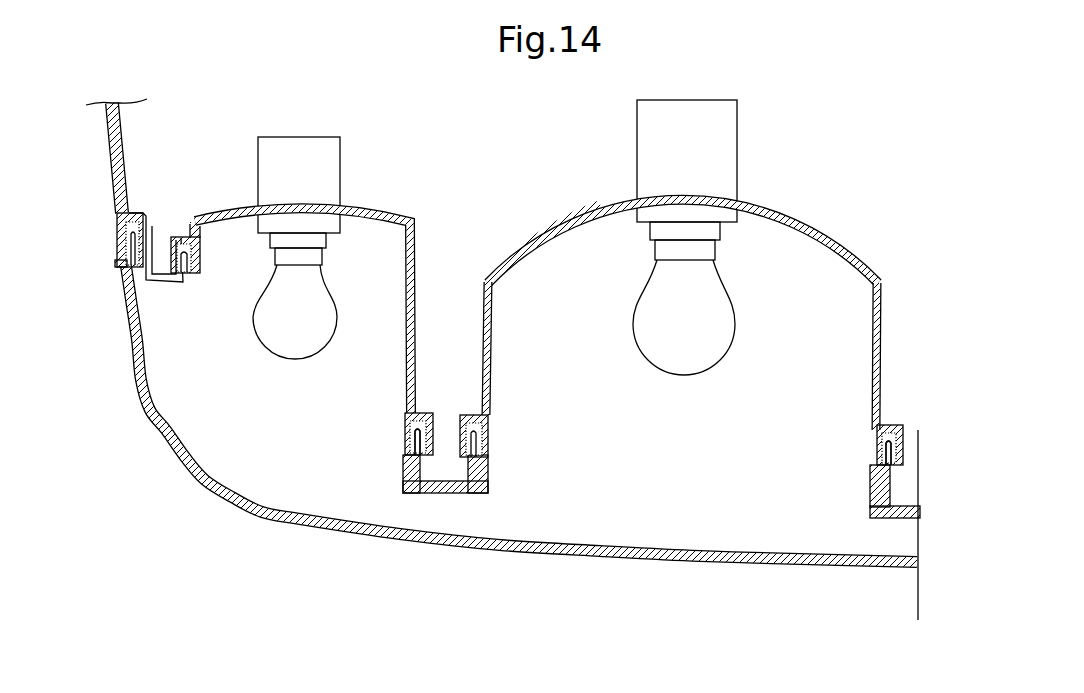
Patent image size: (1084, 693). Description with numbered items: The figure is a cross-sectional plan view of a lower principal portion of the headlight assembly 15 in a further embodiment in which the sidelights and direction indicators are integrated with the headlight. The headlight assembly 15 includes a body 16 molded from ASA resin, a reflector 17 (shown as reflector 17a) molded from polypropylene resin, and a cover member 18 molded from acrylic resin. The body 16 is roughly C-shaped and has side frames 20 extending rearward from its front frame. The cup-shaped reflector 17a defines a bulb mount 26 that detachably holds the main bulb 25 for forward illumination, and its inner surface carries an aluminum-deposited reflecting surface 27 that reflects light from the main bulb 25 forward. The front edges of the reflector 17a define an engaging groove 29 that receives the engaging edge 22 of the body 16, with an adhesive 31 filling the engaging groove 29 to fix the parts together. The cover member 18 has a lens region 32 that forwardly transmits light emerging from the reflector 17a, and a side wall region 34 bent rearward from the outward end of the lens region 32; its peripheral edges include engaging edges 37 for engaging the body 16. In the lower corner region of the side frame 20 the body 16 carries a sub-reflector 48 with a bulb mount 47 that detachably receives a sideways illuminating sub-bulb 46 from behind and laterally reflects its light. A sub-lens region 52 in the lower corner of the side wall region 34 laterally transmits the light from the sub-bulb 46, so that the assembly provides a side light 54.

The headlight assembly 15 is at (432, 544).
The body 16 is at (127, 168).
The reflector 17a is at (782, 220).
The reflectors 17 is at (683, 241).
The cover member 18 is at (261, 522).
The side frames 20 is at (122, 130).
The engaging edge 22 is at (186, 276).
The main bulb 25 is at (706, 307).
The bulb mount 26 is at (722, 165).
The reflecting surface 27 is at (590, 232).
The engaging groove 29 is at (470, 418).
The adhesive 31 is at (118, 238).
The lens regions 32 is at (661, 548).
The side wall regions 34 is at (501, 414).
The engaging edges 37 is at (118, 240).
The sub-bulb 46 is at (302, 352).
The bulb mount 47 is at (320, 155).
The sub-reflector 48 is at (383, 217).
The sub-lens region 52 is at (135, 380).
The side lights 54 is at (178, 486).